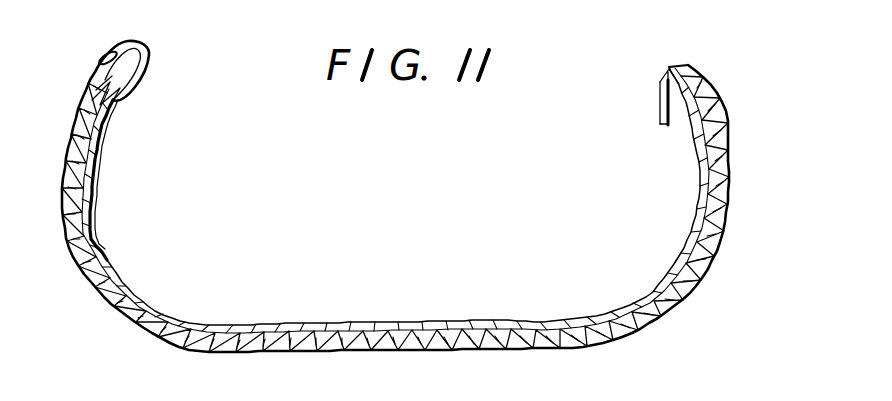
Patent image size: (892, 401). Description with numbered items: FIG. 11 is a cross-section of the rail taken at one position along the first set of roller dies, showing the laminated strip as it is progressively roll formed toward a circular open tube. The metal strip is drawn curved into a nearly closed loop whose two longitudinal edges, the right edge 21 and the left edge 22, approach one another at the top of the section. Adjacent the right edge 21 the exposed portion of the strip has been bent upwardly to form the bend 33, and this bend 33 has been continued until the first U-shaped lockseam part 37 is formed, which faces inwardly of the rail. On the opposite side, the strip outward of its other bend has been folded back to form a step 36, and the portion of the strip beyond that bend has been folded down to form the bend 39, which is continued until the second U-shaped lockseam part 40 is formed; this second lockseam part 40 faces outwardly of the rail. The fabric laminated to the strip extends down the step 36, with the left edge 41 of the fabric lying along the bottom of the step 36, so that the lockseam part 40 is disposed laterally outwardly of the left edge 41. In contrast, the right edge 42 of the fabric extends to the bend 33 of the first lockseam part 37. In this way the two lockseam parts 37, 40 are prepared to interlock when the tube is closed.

The right edge of the metal strip 21 is at (662, 127).
The left edge of the metal strip 22 is at (103, 64).
The bend 33 is at (665, 75).
The step 36 is at (112, 122).
The first U-shaped lockseam part 37 is at (668, 127).
The bend 39 is at (148, 44).
The second U-shaped lockseam part 40 is at (140, 93).
The left edge of the fabric 41 is at (145, 80).
The right edge of the fabric 42 is at (669, 64).